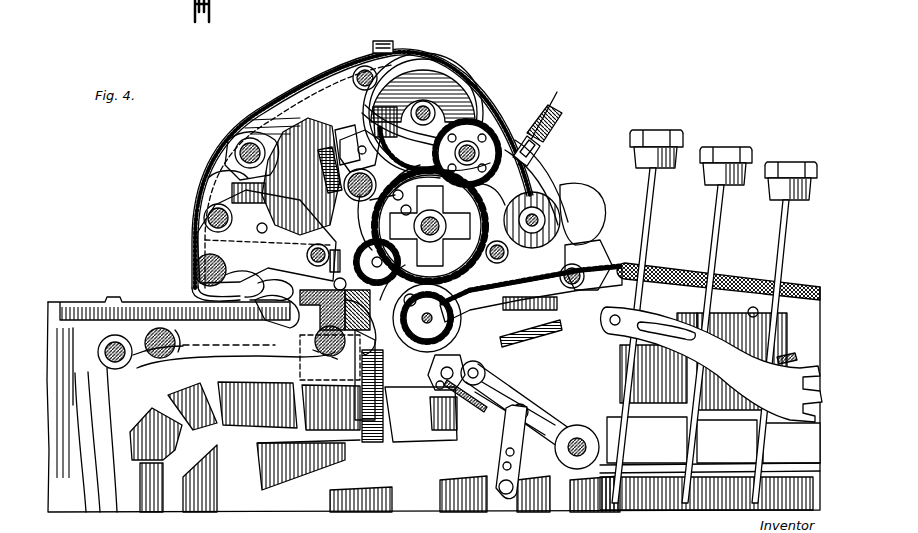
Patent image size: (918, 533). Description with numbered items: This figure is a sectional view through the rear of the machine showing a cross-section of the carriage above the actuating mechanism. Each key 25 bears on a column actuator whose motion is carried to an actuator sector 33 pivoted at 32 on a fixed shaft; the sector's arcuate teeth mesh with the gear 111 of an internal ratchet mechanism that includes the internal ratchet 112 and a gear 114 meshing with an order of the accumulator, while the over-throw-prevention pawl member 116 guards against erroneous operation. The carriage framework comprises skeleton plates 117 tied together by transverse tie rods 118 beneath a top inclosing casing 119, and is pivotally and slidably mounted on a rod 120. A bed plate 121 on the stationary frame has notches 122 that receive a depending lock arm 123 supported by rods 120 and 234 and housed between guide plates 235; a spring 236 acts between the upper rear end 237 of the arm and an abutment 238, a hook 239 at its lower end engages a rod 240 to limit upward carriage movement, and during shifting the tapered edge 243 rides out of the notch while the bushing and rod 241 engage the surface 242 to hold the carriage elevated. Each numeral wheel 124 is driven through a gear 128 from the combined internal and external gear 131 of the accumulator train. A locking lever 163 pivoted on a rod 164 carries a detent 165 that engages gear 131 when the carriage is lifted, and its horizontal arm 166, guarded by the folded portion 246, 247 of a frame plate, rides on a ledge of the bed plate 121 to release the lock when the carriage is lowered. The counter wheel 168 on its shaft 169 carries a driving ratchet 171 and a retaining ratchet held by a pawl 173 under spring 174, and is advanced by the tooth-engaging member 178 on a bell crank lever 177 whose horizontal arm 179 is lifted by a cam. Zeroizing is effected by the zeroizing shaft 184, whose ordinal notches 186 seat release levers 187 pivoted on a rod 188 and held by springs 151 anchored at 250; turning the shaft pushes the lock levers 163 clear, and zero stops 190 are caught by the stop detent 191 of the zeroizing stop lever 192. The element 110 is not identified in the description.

The key 25 is at (715, 155).
The fixed shaft 32 is at (433, 410).
The actuator sector 33 is at (585, 275).
The clamp bar 110 is at (610, 258).
The gear 111 is at (437, 369).
The internal ratchet 112 is at (403, 323).
The gear 114 is at (402, 323).
The over-throw-prevention pawl member 116 is at (440, 368).
The skeleton plates 117 is at (278, 100).
The transverse tie rods 118 is at (395, 50).
The top inclosing casing 119 is at (258, 117).
The rod 120 is at (194, 268).
The bed plate 121 is at (345, 308).
The notches 122 is at (300, 310).
The lock arm 123 is at (240, 245).
The numeral wheel 124 is at (442, 74).
The gear 128 is at (560, 118).
The combined internal and external gear 131 is at (512, 190).
The springs 151 is at (328, 130).
The locking lever 163 is at (310, 125).
The rod 164 is at (300, 357).
The detents 165 is at (338, 135).
The horizontal arms 166 is at (355, 355).
The counter wheel 168 is at (565, 205).
The shafts 169 is at (540, 221).
The driving ratchet 171 is at (582, 246).
The pivoted pawl 173 is at (540, 212).
The spring 174 is at (548, 170).
The bell crank lever 177 is at (641, 383).
The tooth-engaging member 178 is at (468, 330).
The horizontal arm 179 is at (495, 452).
The zeroizing shaft 184 is at (472, 136).
The ordinal notches 186 is at (432, 105).
The zeroizing release and stop levers 187 is at (412, 105).
The rod 188 is at (360, 130).
The zero stops 190 is at (420, 38).
The stop detent 191 is at (470, 163).
The zeroizing stop lever 192 is at (478, 132).
The rod 234 is at (232, 190).
The guide plates 235 is at (253, 228).
The spring 236 is at (236, 150).
The upper rear end 237 is at (232, 135).
The abutment 238 is at (215, 178).
The hook 239 is at (225, 280).
The rod 240 is at (265, 292).
The bushing and rod 241 is at (307, 255).
The surface 242 is at (332, 270).
The tapered edge 243 is at (262, 318).
The folded portion 246 is at (362, 360).
The folded portion 247 is at (300, 436).
The connection point 250 is at (272, 123).